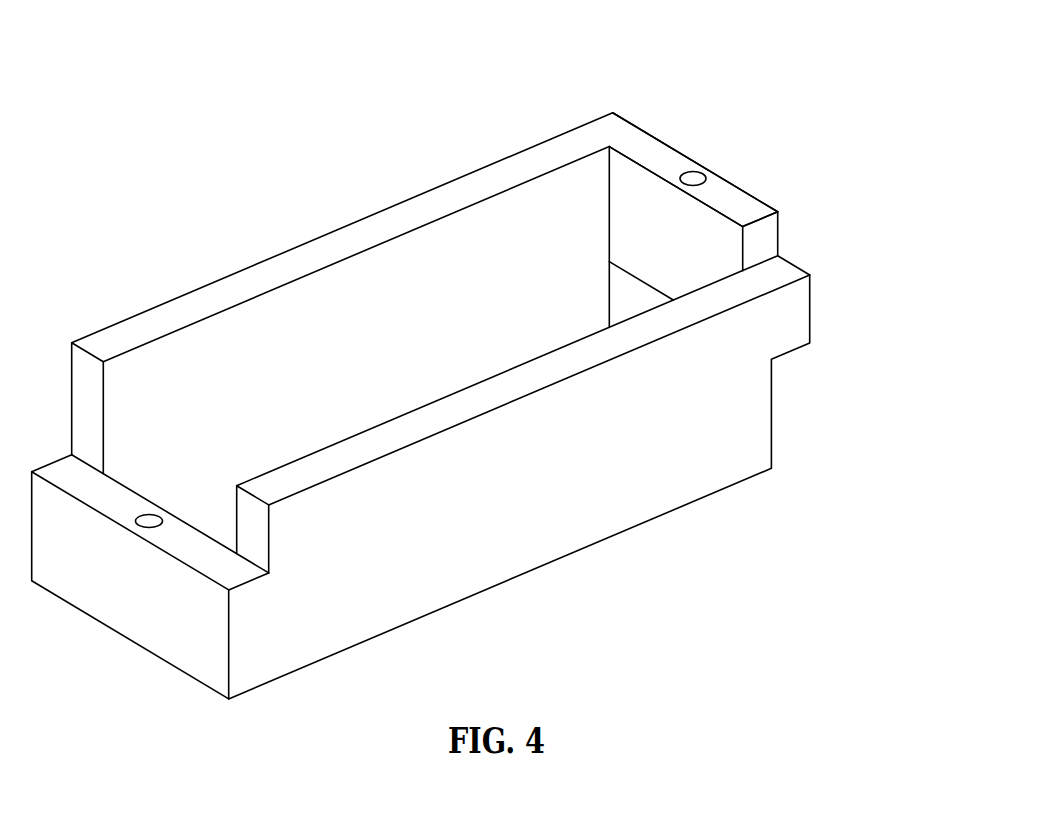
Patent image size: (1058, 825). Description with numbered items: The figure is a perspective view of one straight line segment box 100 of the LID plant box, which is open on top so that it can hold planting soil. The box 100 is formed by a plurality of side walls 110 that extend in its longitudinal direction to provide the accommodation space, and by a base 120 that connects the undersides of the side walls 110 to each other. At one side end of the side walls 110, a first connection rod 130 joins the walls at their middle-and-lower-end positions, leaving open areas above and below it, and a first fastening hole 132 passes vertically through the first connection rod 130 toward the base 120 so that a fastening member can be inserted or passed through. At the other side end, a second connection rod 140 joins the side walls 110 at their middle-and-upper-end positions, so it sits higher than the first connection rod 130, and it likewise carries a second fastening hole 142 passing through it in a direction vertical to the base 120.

The straight line segment box 100 is at (372, 60).
The side wall 110 is at (509, 257).
The base 120 is at (523, 422).
The first connection rod 130 is at (150, 463).
The first fastening hole 132 is at (110, 597).
The second connection rod 140 is at (693, 134).
The second fastening hole 142 is at (762, 143).